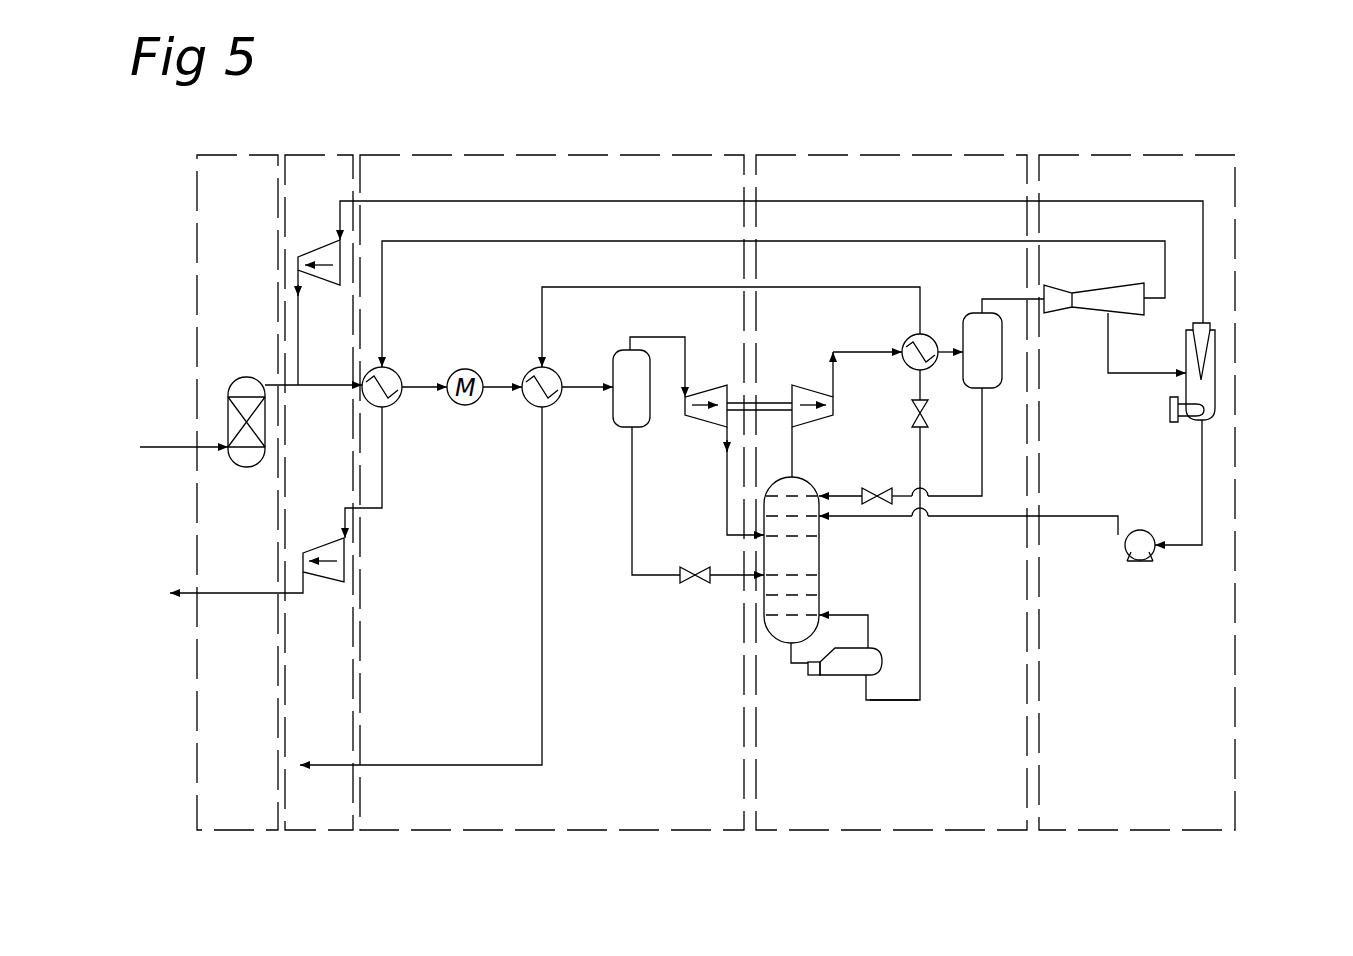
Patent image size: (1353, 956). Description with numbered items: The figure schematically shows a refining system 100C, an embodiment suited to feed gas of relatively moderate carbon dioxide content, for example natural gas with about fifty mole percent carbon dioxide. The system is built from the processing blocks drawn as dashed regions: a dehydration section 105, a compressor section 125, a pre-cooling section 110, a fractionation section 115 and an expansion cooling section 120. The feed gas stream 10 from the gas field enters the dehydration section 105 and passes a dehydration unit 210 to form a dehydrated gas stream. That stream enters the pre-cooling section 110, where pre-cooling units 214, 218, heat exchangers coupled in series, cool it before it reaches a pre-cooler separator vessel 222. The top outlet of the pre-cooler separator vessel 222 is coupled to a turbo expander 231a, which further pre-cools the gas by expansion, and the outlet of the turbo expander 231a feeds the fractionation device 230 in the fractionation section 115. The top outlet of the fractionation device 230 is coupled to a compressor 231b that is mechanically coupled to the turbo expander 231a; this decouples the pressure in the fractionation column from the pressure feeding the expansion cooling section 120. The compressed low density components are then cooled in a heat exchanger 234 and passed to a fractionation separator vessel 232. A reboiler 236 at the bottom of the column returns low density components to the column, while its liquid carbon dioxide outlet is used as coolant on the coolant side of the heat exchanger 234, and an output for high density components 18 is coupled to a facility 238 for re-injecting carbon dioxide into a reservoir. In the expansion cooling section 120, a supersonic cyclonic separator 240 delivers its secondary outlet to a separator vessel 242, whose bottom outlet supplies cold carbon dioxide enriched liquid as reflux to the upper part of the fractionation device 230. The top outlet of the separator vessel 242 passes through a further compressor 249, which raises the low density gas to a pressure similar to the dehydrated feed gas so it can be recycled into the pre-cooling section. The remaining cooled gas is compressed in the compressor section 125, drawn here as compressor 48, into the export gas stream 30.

The refining system 100C is at (728, 118).
The dehydration section 105 is at (232, 155).
The compressor section 125 is at (315, 155).
The pre-cooling section 110 is at (551, 155).
The fractionation section 115 is at (880, 155).
The expansion cooling section 120 is at (1130, 155).
The feed gas stream 10 is at (168, 447).
The export gas stream 30 is at (212, 593).
The output for high density components 18 is at (390, 765).
The dehydration unit 210 is at (246, 467).
The further compressor 249 is at (320, 262).
The compressor 48 is at (325, 572).
The pre-cooling unit 214 is at (387, 372).
The pre-cooling unit 218 is at (538, 372).
The pre-cooler separator vessel 222 is at (625, 418).
The turbo expander 231a is at (704, 414).
The compressor 231b is at (805, 393).
The heat exchanger 234 is at (912, 355).
The fractionation separator vessel 232 is at (977, 328).
The fractionation device 230 is at (810, 556).
The reboiler 236 is at (850, 667).
The facility for re-injecting CO2 238 is at (900, 700).
The supersonic cyclonic separator 240 is at (1095, 307).
The separator vessel 242 is at (1205, 362).